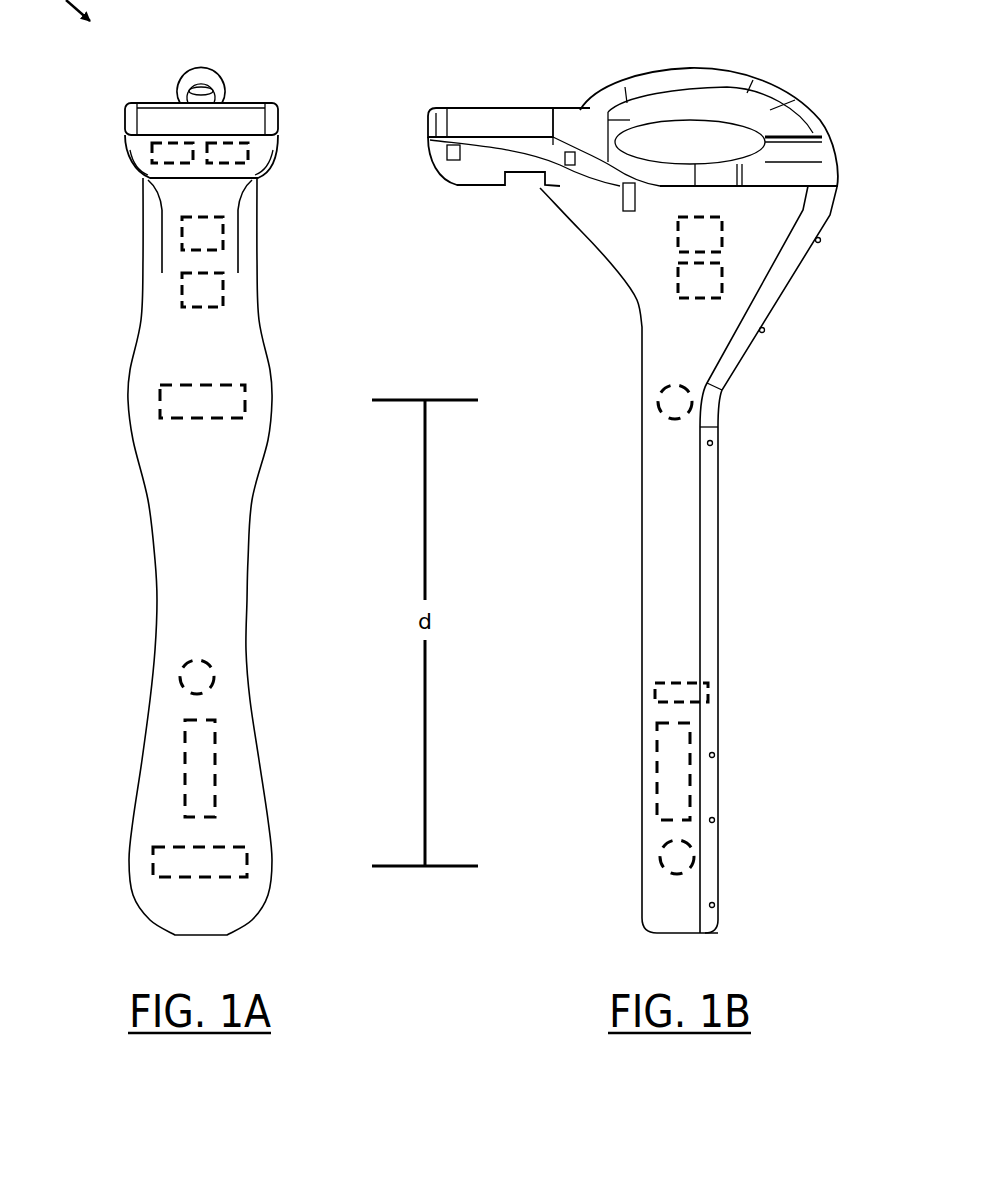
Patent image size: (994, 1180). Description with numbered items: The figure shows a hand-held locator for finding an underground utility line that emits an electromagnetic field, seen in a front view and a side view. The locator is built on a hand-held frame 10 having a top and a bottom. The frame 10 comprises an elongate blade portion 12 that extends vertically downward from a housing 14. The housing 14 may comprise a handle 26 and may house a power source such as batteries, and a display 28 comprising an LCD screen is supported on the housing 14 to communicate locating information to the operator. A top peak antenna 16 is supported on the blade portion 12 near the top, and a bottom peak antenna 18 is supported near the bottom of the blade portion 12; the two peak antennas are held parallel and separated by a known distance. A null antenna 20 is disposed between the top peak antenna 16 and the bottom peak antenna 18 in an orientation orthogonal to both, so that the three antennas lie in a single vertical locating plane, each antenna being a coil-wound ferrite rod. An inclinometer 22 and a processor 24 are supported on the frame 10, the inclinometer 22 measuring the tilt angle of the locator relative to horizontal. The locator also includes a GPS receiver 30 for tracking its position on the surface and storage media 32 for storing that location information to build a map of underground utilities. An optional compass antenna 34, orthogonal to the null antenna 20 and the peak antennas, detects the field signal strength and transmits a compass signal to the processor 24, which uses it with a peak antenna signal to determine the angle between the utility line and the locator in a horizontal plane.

In FIG. 1A, the hand-held frame 10 is at (140, 338).
In FIG. 1B, the hand-held frame 10 is at (640, 360).
In FIG. 1A, the blade portion 12 is at (155, 564).
In FIG. 1B, the blade portion 12 is at (645, 590).
In FIG. 1A, the housing 14 is at (125, 136).
In FIG. 1B, the housing 14 is at (434, 160).
In FIG. 1A, the top peak antenna 16 is at (160, 403).
In FIG. 1B, the top peak antenna 16 is at (660, 402).
In FIG. 1A, the bottom peak antenna 18 is at (154, 862).
In FIG. 1B, the bottom peak antenna 18 is at (659, 853).
In FIG. 1A, the null antenna 20 is at (186, 775).
In FIG. 1B, the null antenna 20 is at (660, 777).
In FIG. 1A, the inclinometer 22 is at (183, 233).
In FIG. 1B, the inclinometer 22 is at (679, 233).
In FIG. 1A, the processor 24 is at (223, 288).
In FIG. 1B, the processor 24 is at (679, 287).
In FIG. 1A, the handle 26 is at (185, 75).
In FIG. 1B, the handle 26 is at (667, 74).
In FIG. 1A, the display 28 is at (236, 103).
In FIG. 1B, the display 28 is at (474, 108).
In FIG. 1A, the GPS receiver 30 is at (153, 155).
In FIG. 1A, the storage media 32 is at (245, 160).
In FIG. 1A, the compass antenna 34 is at (214, 678).
In FIG. 1B, the compass antenna 34 is at (706, 683).